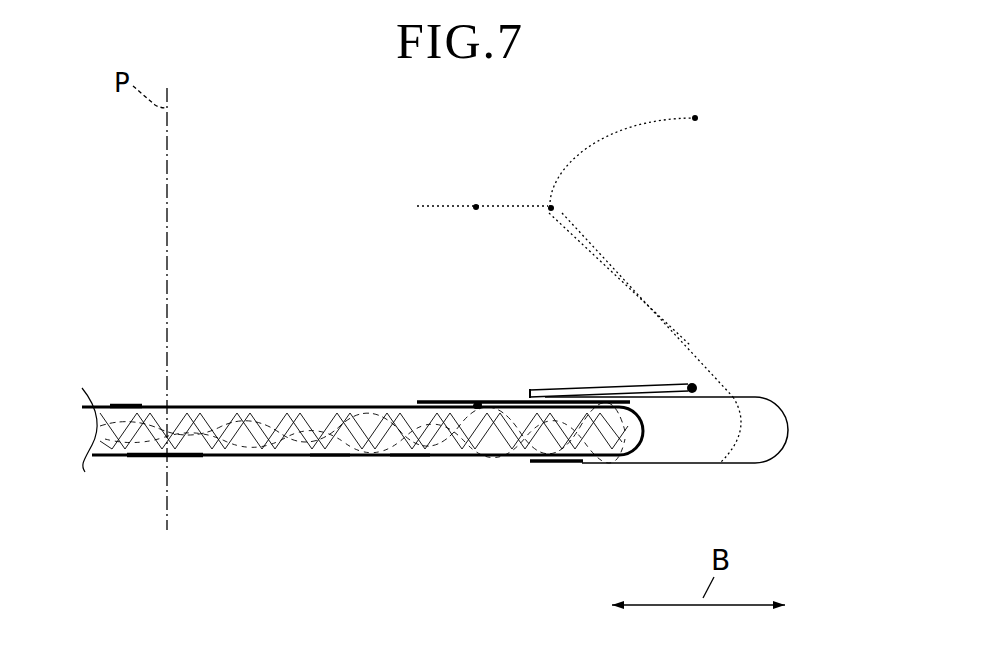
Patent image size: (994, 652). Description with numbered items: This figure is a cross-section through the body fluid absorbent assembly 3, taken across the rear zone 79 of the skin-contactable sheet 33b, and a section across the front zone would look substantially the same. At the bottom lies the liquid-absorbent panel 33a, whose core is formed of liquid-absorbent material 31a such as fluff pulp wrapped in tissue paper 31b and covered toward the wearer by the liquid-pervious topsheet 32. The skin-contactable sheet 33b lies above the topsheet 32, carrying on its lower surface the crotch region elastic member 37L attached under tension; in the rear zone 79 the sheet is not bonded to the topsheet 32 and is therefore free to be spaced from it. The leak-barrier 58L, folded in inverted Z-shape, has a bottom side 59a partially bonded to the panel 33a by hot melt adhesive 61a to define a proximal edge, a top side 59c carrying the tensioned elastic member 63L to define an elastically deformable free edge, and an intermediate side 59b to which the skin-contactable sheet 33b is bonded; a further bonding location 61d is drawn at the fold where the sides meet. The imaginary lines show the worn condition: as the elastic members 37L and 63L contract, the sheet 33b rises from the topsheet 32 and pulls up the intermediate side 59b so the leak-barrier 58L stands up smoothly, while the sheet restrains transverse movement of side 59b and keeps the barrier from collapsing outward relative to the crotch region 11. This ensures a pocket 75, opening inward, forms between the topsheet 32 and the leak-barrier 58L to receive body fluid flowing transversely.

The body fluid absorbent assembly 3 is at (103, 128).
The crotch region 11 is at (258, 457).
The liquid-absorbent material 31a is at (330, 457).
The tissue paper 31b is at (408, 457).
The topsheet 32 is at (200, 405).
The liquid-absorbent panel 33a is at (127, 404).
The skin-contactable sheet 33b is at (428, 398).
The crotch region elastic member 37L is at (476, 211).
The leak-barrier 58L is at (790, 405).
The bottom side 59a is at (622, 465).
The intermediate side 59b is at (745, 396).
The top side 59c is at (566, 389).
The hot melt adhesive 61a is at (560, 463).
The hinge portion 61d is at (530, 390).
The elastic member 63L is at (736, 120).
The pocket 75 is at (665, 348).
The rear zone 79 is at (477, 401).